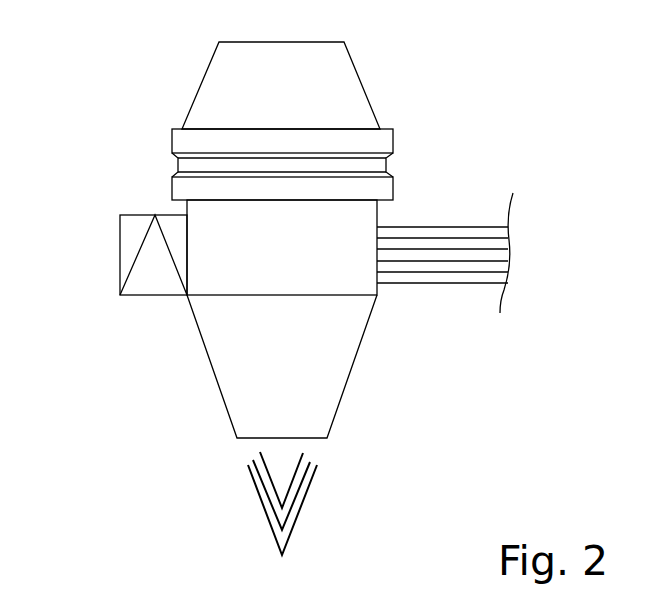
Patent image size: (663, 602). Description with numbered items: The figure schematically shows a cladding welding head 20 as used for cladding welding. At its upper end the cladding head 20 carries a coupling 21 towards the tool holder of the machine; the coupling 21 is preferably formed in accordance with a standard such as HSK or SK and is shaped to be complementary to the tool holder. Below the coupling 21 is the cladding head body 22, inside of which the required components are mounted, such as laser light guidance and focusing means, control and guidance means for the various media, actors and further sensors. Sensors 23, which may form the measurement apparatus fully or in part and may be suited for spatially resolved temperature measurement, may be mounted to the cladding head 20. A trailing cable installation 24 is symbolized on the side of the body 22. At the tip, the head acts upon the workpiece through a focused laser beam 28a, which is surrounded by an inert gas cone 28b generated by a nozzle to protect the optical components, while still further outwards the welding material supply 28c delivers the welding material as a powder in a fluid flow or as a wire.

The cladding head 20 is at (123, 93).
The coupling 21 is at (413, 42).
The cladding head body 22 is at (228, 378).
The sensors 23 is at (128, 247).
The trailing cable installation 24 is at (464, 234).
The focused laser beam 28a is at (283, 472).
The inert gas cone 28b is at (292, 499).
The welding material supply 28c is at (292, 527).